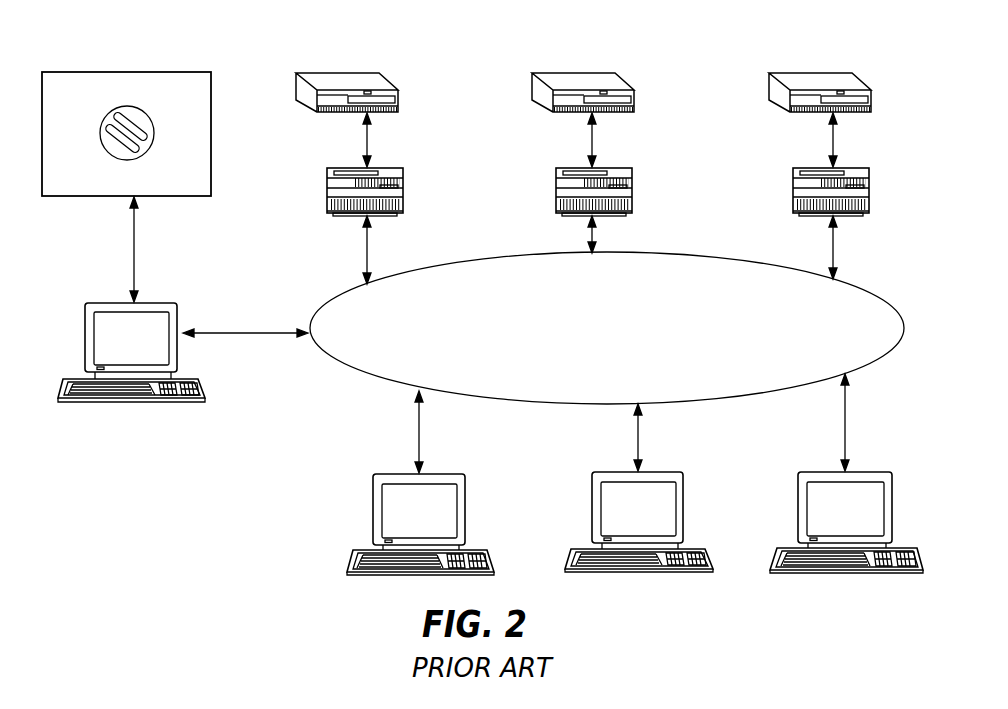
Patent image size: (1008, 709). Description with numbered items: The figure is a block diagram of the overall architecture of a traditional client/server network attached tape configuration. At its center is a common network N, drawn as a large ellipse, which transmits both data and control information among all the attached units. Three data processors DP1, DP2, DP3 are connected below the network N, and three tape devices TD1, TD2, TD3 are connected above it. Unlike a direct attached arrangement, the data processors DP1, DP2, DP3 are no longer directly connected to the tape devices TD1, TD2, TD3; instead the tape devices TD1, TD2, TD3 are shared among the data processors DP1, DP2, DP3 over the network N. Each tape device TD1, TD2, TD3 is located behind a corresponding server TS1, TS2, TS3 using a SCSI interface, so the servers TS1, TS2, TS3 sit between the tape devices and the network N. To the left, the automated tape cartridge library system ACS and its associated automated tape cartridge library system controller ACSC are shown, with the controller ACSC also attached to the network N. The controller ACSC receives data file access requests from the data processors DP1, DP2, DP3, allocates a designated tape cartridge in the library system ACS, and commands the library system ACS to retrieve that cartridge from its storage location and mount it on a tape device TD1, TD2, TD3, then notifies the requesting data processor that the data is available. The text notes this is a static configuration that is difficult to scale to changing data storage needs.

The automated tape cartridge library system ACS is at (147, 144).
The automated tape cartridge library system controller ACSC is at (158, 402).
The common network N is at (607, 328).
The tape device TD1 is at (303, 87).
The tape device TD2 is at (540, 87).
The tape device TD3 is at (777, 87).
The server TS1 is at (327, 183).
The server TS2 is at (556, 183).
The server TS3 is at (793, 183).
The data processor DP1 is at (373, 492).
The data processor DP2 is at (592, 492).
The data processor DP3 is at (798, 493).